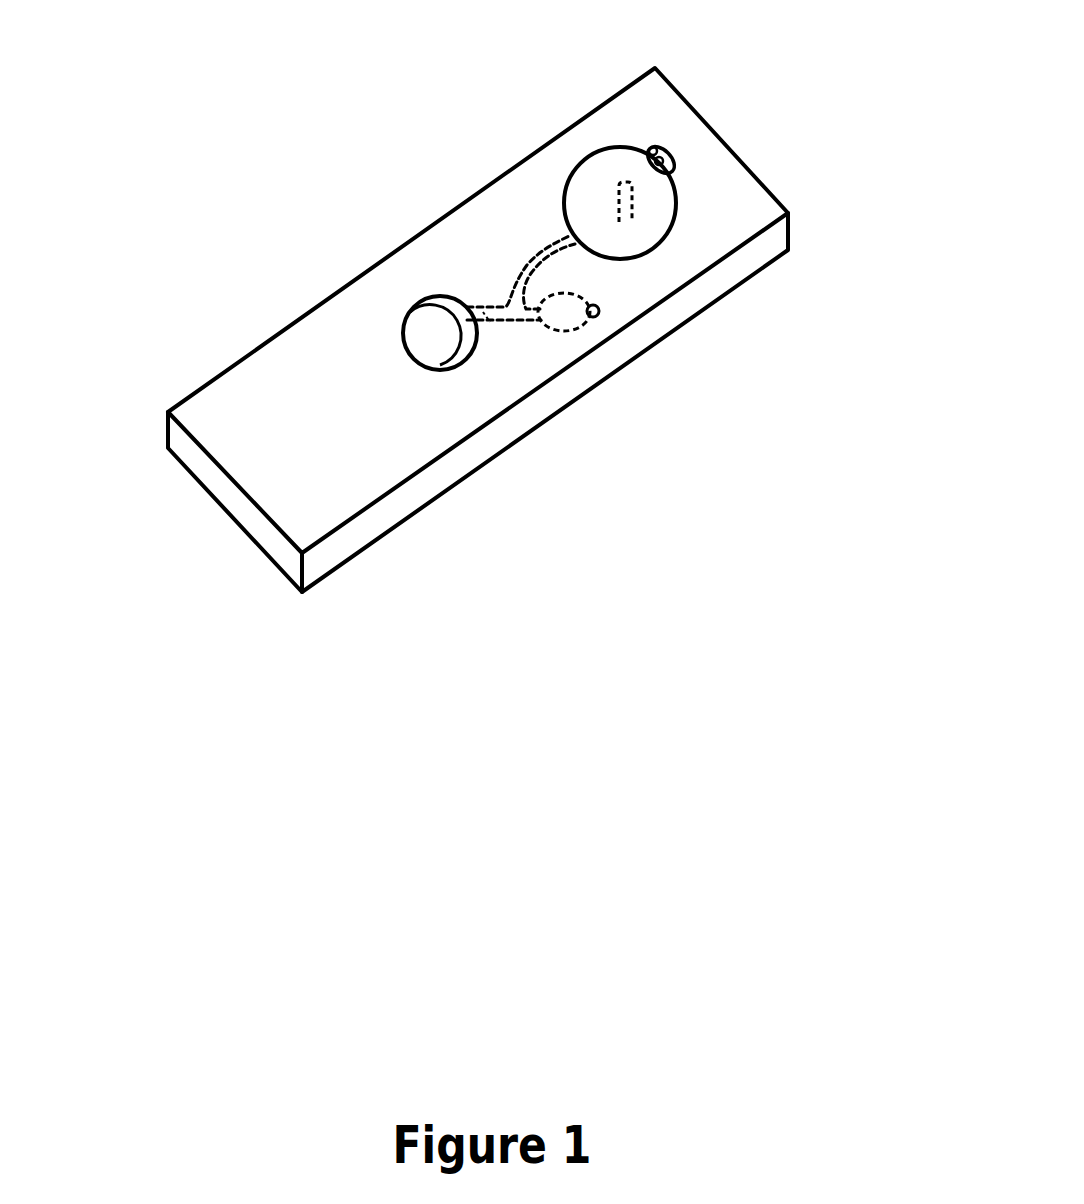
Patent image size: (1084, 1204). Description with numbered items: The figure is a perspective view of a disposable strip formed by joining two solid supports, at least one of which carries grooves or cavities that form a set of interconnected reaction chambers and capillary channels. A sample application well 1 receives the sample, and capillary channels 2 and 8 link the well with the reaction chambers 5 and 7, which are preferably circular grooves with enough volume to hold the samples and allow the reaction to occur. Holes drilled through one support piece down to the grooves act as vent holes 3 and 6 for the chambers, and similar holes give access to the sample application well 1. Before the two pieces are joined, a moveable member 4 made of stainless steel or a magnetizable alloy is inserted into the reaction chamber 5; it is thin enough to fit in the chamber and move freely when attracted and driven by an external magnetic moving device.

The sample application well 1 is at (402, 338).
The capillary channel 2 is at (523, 267).
The vent hole 3 is at (651, 149).
The moveable member 4 is at (621, 221).
The reaction chamber 5 is at (642, 254).
The vent hole 6 is at (599, 311).
The reaction chamber 7 is at (572, 330).
The capillary channel 8 is at (483, 320).